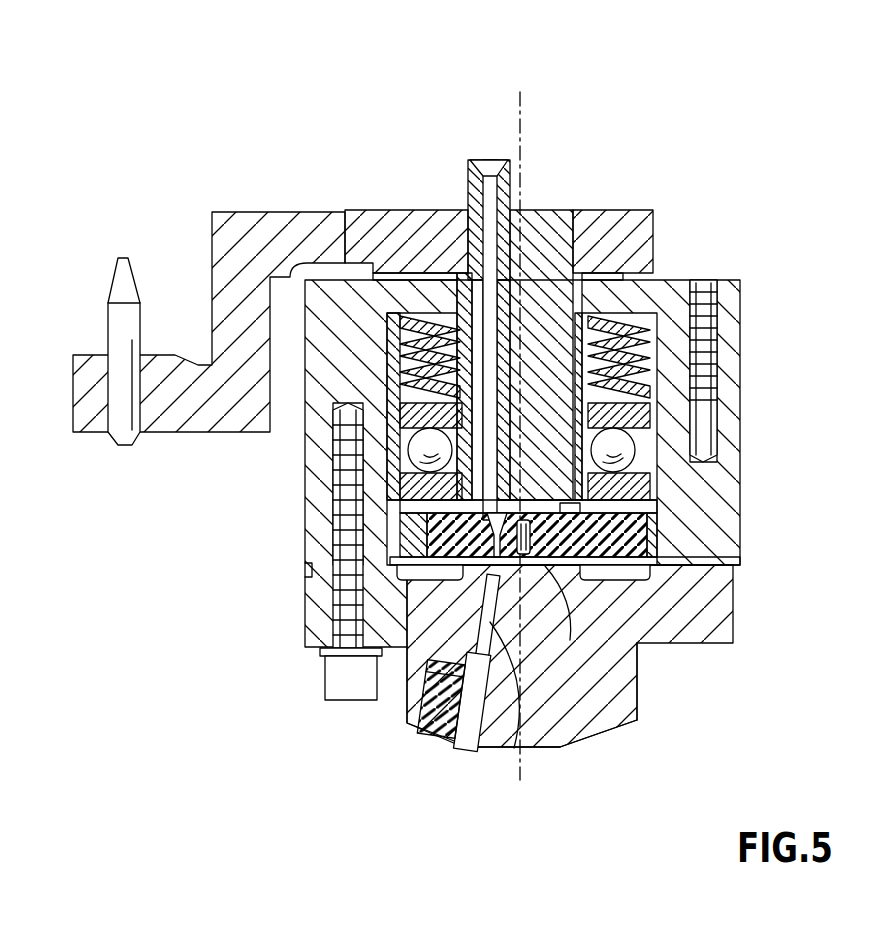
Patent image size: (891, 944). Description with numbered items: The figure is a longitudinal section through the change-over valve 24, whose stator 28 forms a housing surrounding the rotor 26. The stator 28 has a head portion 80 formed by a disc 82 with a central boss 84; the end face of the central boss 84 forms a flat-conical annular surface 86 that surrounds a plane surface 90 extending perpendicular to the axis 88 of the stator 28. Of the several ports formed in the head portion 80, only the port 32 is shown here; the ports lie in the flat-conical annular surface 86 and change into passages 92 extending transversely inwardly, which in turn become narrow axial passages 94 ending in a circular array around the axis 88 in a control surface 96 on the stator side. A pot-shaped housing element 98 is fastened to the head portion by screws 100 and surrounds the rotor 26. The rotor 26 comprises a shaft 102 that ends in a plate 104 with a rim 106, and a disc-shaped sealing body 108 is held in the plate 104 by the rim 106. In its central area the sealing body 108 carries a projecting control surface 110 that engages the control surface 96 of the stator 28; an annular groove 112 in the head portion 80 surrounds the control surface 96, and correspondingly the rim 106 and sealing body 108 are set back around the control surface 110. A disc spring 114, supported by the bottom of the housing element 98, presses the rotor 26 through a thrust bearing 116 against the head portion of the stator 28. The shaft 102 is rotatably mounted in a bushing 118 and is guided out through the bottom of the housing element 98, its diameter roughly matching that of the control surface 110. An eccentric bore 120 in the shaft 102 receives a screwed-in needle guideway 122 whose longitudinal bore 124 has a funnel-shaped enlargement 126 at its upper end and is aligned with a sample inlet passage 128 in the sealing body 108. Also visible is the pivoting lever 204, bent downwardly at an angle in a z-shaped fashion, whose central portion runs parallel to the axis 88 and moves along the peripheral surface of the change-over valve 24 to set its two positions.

The change-over valve 24 is at (745, 335).
The rotor 26 is at (548, 247).
The stator 28 is at (658, 627).
The port 32 is at (440, 722).
The head portion 80 is at (622, 680).
The disc 82 is at (722, 630).
The central boss 84 is at (402, 697).
The flat-conical annular surface 86 is at (615, 727).
The axis 88 is at (522, 127).
The plane surface 90 is at (540, 752).
The passages 92 is at (480, 748).
The axial passages 94 is at (528, 680).
The control surface 96 is at (667, 550).
The pot-shaped housing element 98 is at (727, 463).
The screws 100 is at (333, 497).
The shaft 102 is at (654, 250).
The plate 104 is at (672, 513).
The rim 106 is at (400, 543).
The sealing body 108 is at (582, 585).
The control surface 110 is at (556, 650).
The annular groove 112 is at (740, 566).
The disc spring 114 is at (700, 330).
The thrust bearing 116 is at (408, 448).
The bushing 118 is at (440, 320).
The eccentric bore 120 is at (417, 313).
The needle guideway 122 is at (470, 200).
The longitudinal bore 124 is at (520, 230).
The funnel-shaped enlargement 126 is at (497, 162).
The sample inlet passage 128 is at (488, 583).
The pivoting lever 204 is at (258, 222).